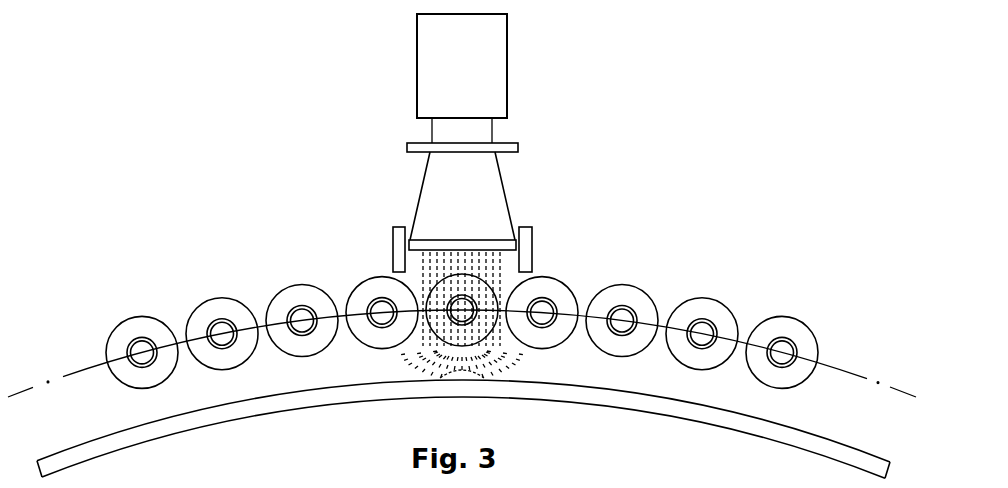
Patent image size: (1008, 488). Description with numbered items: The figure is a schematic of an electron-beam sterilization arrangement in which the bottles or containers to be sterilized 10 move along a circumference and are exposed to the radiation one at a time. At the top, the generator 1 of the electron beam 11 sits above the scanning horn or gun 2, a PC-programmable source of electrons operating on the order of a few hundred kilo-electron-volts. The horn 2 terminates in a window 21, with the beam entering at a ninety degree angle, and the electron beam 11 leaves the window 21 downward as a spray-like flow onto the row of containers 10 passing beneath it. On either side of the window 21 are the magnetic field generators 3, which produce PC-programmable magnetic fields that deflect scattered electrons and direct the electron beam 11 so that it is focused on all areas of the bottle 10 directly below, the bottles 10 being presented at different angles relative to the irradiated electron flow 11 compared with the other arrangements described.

The generator 1 is at (487, 57).
The scanning horn or gun 2 is at (485, 202).
The window 21 is at (431, 241).
The magnetic field generators 3 is at (536, 237).
The bottles or containers to be sterilized 10 is at (217, 296).
The electron beam 11 is at (421, 272).